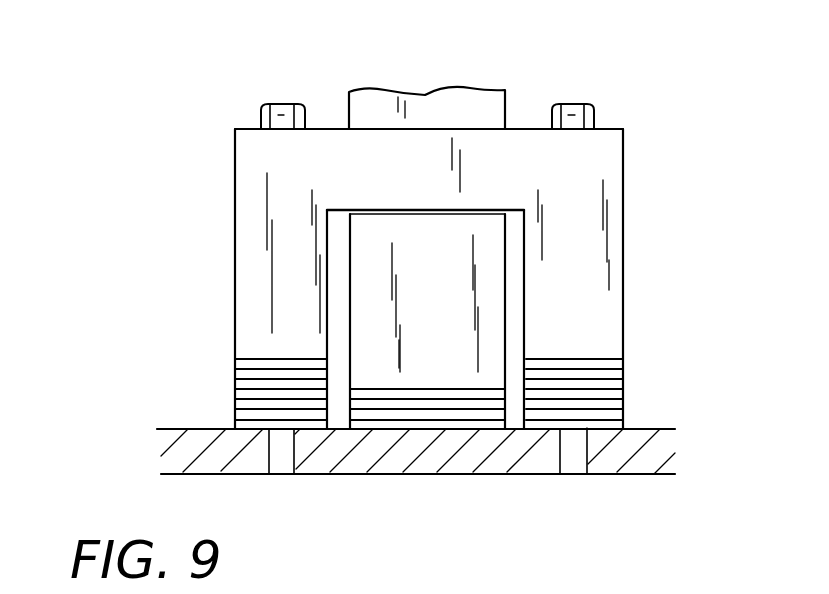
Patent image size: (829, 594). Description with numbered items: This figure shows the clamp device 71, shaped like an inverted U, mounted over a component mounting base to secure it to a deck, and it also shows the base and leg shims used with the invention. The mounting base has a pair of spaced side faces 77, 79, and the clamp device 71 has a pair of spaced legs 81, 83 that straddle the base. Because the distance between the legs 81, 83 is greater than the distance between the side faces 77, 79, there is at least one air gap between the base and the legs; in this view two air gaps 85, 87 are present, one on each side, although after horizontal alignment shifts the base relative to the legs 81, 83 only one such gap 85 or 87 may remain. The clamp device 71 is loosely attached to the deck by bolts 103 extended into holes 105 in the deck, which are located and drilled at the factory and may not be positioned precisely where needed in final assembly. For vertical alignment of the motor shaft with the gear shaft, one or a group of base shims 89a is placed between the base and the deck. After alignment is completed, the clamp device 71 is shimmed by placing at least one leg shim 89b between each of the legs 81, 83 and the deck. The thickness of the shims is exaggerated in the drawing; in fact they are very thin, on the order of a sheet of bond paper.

The clamp device 71 is at (655, 116).
The side face 77 is at (350, 247).
The side face 79 is at (505, 243).
The leg 81 is at (234, 165).
The leg 83 is at (623, 165).
The air gap 85 is at (338, 278).
The air gap 87 is at (512, 297).
The base shim 89a is at (422, 474).
The leg shim 89b is at (234, 392).
The bolt 103 is at (283, 104).
The hole 105 is at (280, 474).